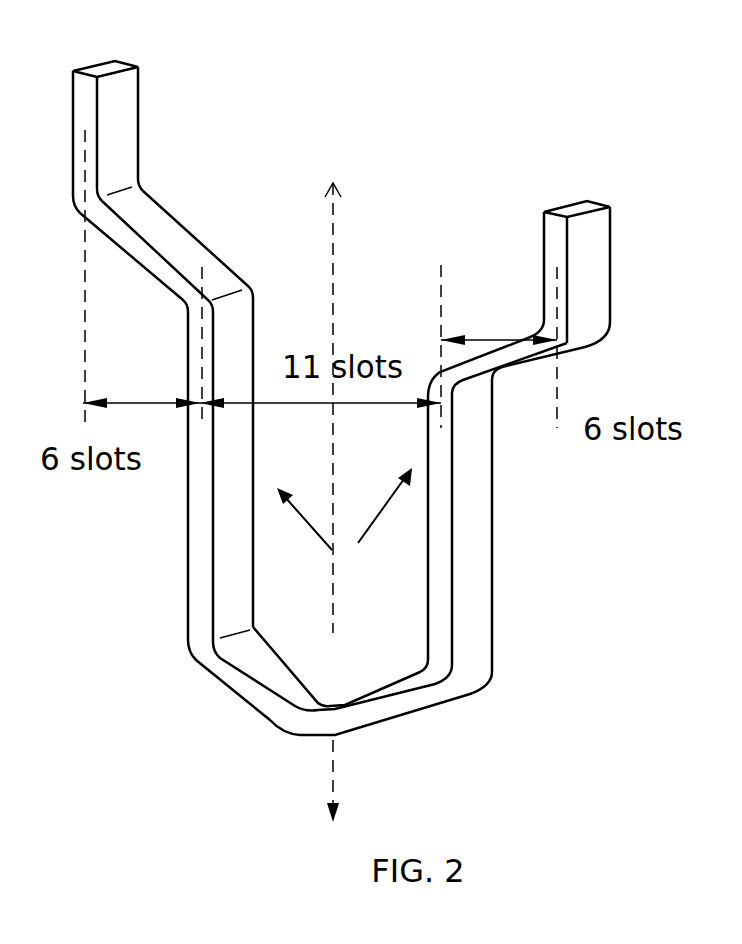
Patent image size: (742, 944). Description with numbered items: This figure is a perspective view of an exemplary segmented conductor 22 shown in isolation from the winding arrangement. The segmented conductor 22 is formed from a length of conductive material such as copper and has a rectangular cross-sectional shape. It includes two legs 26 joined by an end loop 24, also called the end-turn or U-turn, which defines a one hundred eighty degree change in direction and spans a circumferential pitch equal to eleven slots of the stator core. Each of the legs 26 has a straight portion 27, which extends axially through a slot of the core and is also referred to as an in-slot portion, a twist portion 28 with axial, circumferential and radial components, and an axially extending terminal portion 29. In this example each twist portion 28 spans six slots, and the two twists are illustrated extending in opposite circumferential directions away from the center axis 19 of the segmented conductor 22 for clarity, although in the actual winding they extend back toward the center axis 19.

The segmented conductor 22 is at (558, 146).
The terminal portion 29 is at (105, 68).
The twist portion 28 is at (165, 228).
The straight portion 27 is at (203, 507).
The end loop 24 is at (323, 723).
The legs 26 is at (344, 522).
The center axis 19 is at (335, 237).